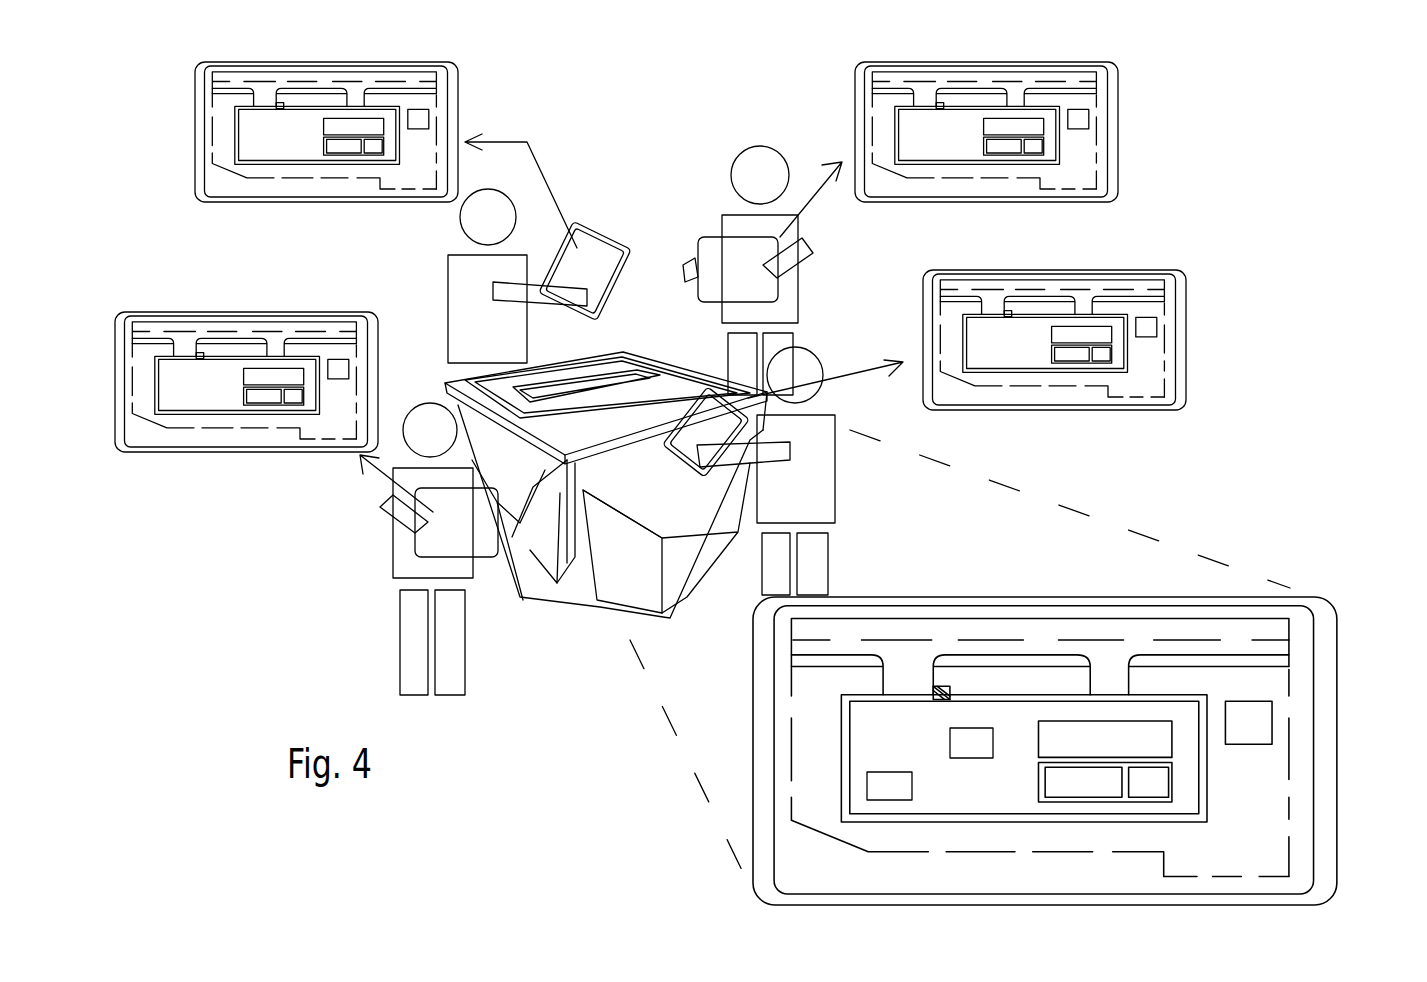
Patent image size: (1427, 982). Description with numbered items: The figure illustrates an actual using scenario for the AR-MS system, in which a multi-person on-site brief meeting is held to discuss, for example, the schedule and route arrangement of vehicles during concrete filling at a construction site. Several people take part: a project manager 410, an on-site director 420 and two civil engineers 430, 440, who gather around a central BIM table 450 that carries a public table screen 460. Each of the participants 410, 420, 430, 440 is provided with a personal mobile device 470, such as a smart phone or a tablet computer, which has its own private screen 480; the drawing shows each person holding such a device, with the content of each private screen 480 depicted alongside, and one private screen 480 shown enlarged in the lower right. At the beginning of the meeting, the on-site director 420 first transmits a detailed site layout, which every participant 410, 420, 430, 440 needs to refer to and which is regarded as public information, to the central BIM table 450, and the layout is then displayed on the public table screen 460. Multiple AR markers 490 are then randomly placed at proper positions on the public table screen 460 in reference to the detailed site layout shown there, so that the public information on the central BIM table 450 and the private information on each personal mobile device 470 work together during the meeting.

The project manager 410 is at (792, 287).
The on-site director 420 is at (827, 495).
The civil engineer 430 is at (457, 280).
The civil engineer 440 is at (400, 560).
The central BIM table 450 is at (607, 618).
The public table screen 460 is at (972, 563).
The personal mobile device 470 is at (458, 90).
The private screen 480 is at (195, 116).
The AR marker 490 is at (960, 743).